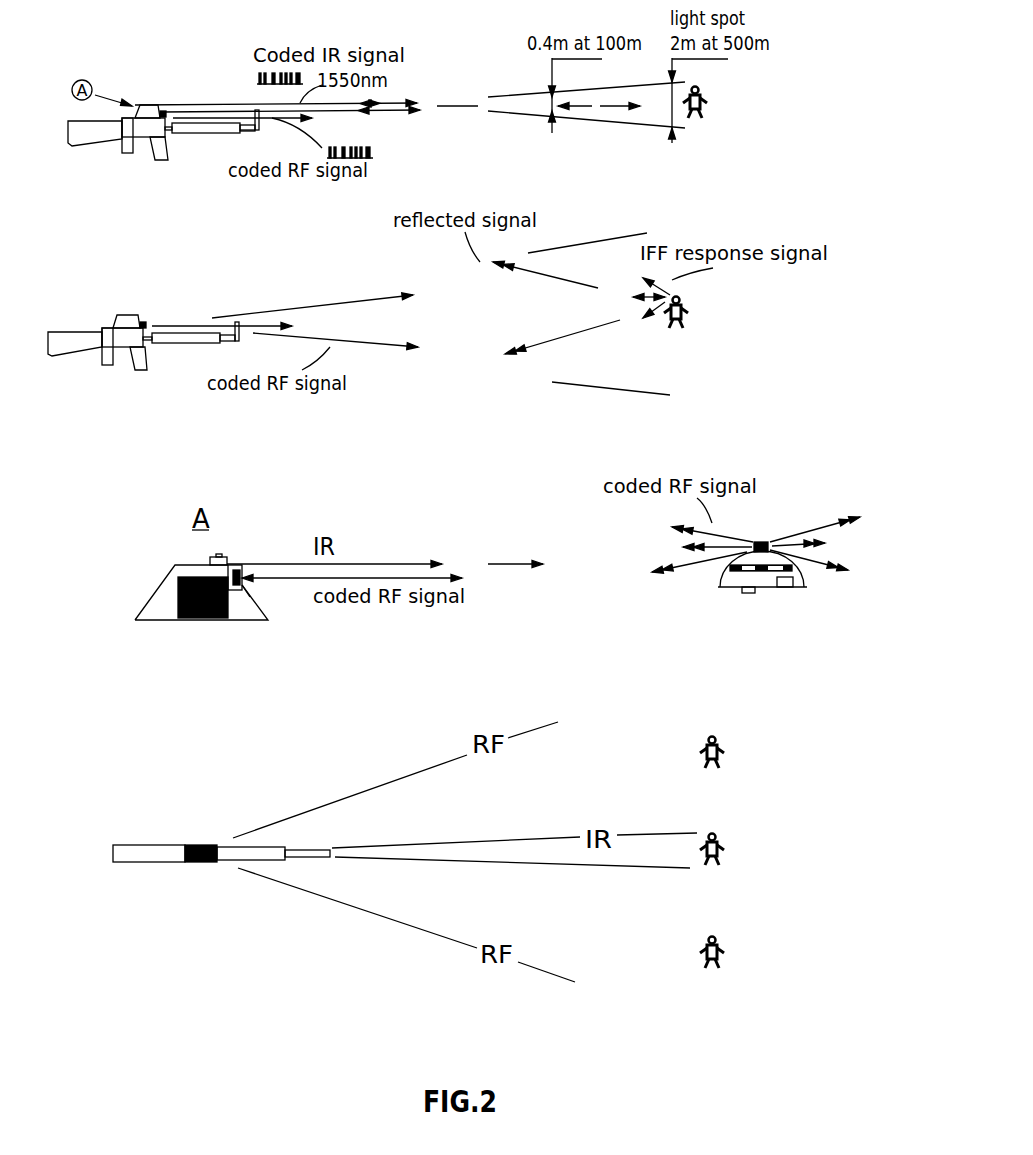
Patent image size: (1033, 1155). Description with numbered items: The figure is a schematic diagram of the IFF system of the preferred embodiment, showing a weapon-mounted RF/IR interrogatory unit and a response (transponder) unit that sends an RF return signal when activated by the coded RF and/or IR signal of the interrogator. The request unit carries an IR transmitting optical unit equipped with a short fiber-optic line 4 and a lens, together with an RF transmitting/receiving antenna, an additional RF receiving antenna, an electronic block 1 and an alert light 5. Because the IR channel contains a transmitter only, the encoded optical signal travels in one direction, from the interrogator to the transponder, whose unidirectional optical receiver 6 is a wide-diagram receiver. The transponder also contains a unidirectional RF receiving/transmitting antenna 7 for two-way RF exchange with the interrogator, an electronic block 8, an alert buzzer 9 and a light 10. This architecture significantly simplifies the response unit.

The electronic block 1 is at (173, 597).
The short fiber-optic line 4 is at (190, 562).
The alert light 5 is at (220, 555).
The unidirectional optical receiver 6 is at (800, 567).
The unidirectional RF receiving/transmitting antenna 7 is at (762, 538).
The electronic block 8 is at (790, 592).
The alert buzzer 9 is at (760, 593).
The light 10 is at (725, 592).